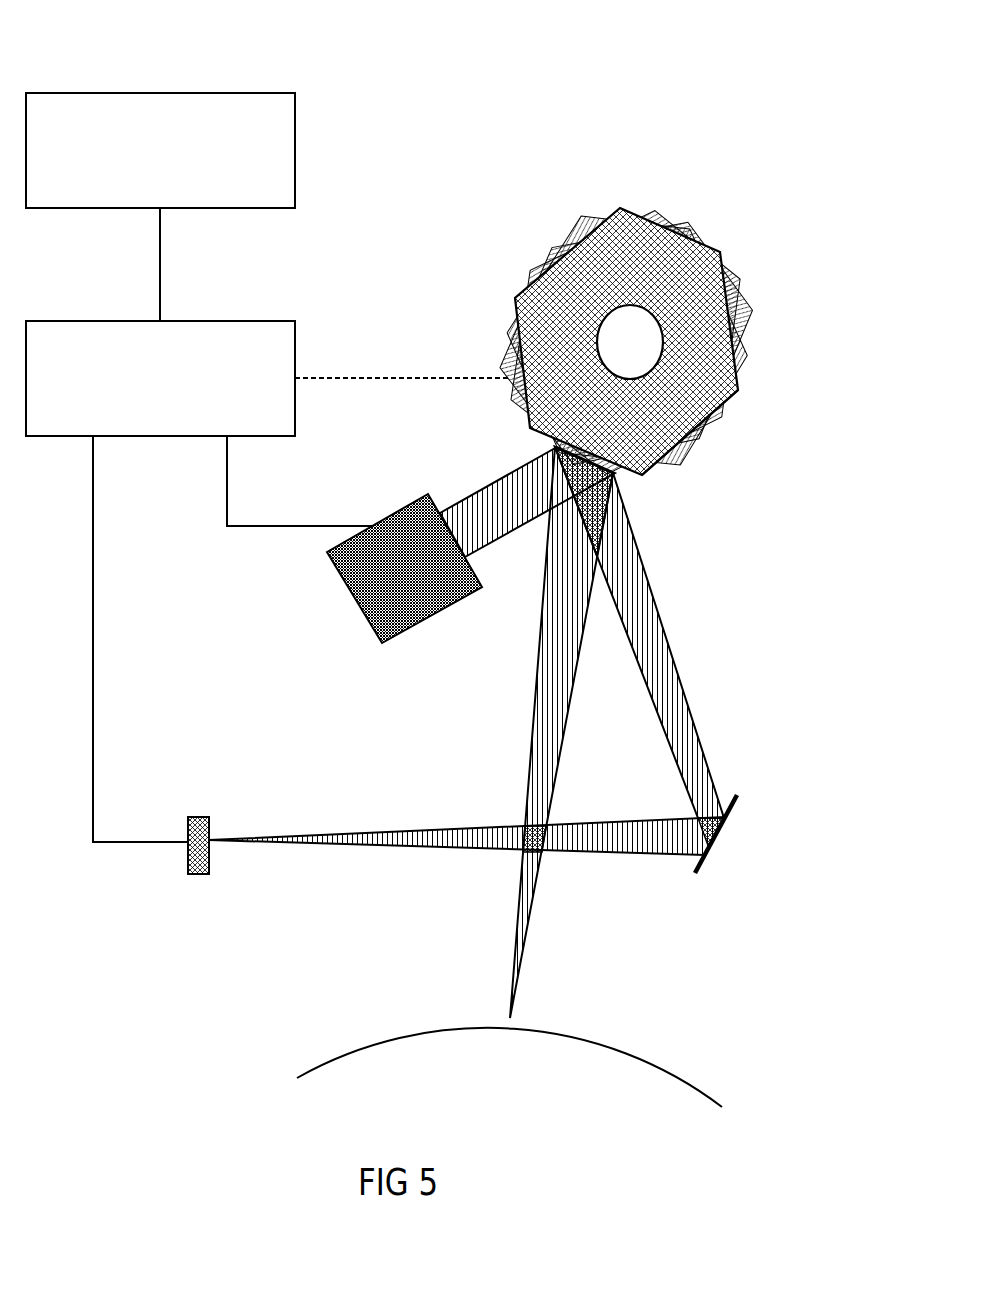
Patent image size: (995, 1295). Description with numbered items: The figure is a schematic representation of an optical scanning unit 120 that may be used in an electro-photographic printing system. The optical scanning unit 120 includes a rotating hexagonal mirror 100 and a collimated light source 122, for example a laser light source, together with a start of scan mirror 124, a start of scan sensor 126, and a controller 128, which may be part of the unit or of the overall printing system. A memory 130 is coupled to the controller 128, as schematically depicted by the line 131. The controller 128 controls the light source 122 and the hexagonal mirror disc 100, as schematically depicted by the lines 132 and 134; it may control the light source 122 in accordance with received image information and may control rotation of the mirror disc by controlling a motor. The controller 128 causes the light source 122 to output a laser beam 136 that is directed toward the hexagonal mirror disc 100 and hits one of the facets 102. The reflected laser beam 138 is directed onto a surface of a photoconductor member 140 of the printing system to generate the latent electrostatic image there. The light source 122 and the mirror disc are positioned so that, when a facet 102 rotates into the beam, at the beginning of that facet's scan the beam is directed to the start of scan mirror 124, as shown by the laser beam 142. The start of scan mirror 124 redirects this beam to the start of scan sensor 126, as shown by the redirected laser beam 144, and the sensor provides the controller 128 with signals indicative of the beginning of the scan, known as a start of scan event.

The rotating hexagonal mirror 100 is at (730, 375).
The facet 102 is at (653, 468).
The optical scanning unit 120 is at (86, 897).
The collimated light source 122 is at (433, 618).
The start of scan mirror 124 is at (715, 838).
The start of scan sensor 126 is at (194, 817).
The controller 128 is at (160, 438).
The memory 130 is at (159, 92).
The line 131 is at (160, 262).
The line 132 is at (320, 526).
The line 134 is at (403, 377).
The laser beam 136 is at (473, 494).
The reflected laser beam 138 is at (532, 740).
The photoconductor member 140 is at (362, 1048).
The laser beam 142 is at (686, 693).
The redirected laser beam 144 is at (356, 833).